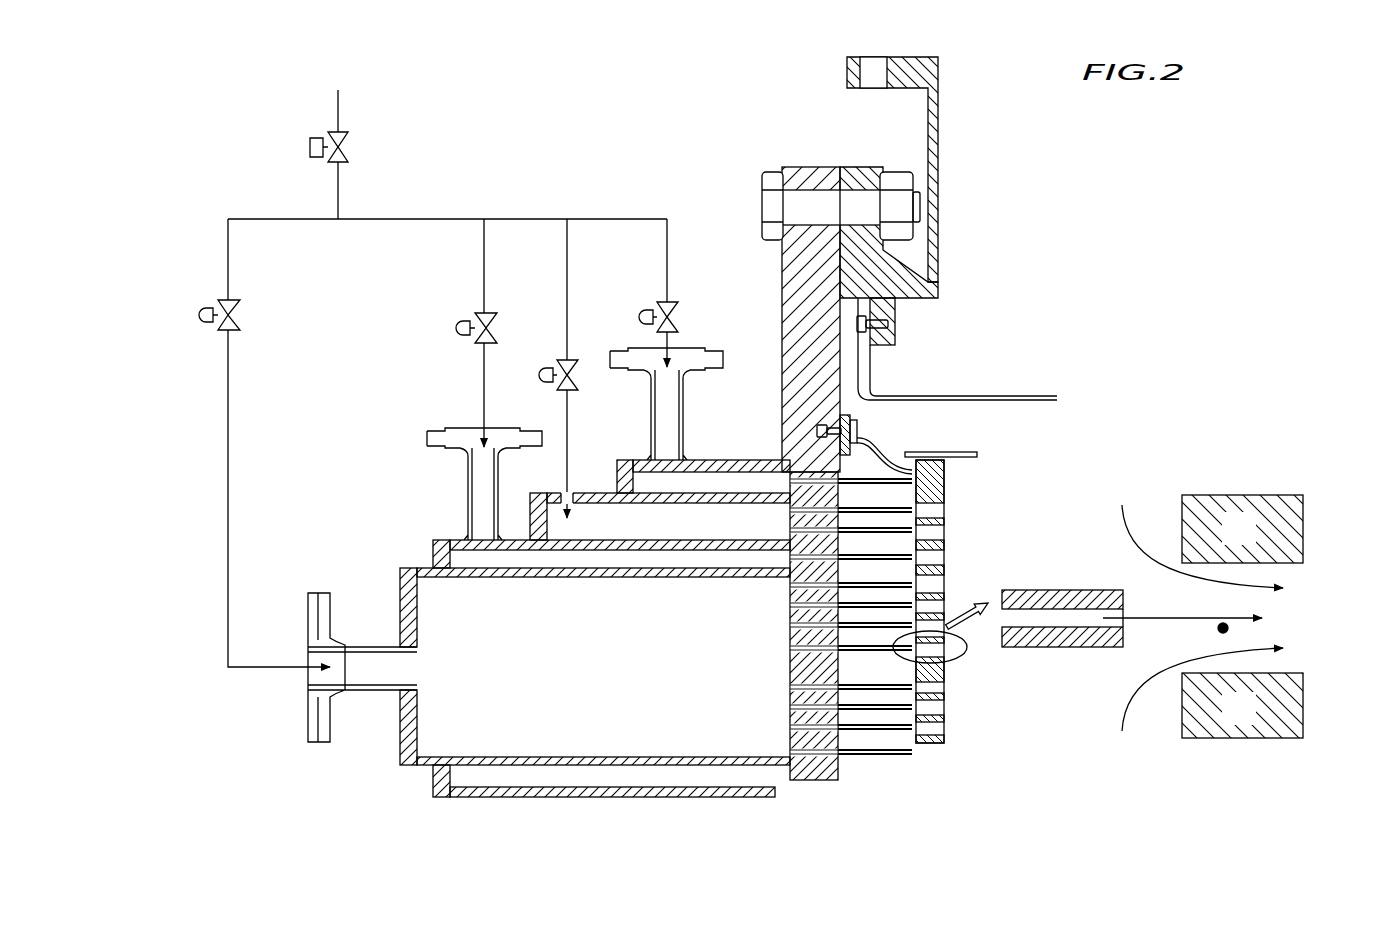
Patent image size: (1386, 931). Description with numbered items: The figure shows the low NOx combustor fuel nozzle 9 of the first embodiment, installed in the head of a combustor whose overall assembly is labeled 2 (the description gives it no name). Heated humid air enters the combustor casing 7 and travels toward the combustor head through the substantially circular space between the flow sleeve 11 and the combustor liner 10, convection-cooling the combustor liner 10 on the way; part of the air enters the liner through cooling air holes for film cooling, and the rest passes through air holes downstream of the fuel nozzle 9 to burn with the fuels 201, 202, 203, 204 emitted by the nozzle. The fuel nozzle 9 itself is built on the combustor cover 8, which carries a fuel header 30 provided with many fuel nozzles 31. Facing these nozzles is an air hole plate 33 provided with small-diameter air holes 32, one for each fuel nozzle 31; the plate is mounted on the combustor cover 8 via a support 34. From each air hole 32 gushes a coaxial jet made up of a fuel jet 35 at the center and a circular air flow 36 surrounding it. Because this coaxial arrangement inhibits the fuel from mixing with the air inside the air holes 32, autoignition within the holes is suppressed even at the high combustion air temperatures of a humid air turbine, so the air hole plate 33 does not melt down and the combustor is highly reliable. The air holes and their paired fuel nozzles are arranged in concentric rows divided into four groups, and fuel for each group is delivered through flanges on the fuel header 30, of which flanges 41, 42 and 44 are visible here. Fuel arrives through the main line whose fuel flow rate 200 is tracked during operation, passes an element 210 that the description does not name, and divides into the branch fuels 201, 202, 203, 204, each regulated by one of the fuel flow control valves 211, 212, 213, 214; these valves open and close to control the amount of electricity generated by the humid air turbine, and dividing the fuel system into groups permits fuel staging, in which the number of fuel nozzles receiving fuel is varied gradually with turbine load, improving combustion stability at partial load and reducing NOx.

The reactor vessel outer shell 2 is at (665, 833).
The combustor casing 7 is at (864, 167).
The combustor cover 8 is at (782, 273).
The fuel nozzle 9 is at (836, 812).
The combustor liner 10 is at (960, 452).
The flow sleeve 11 is at (990, 397).
The fuel header 30 is at (768, 692).
The fuel nozzle 31 is at (882, 755).
The air hole 32 is at (945, 728).
The air hole plate 33 is at (947, 478).
The support 34 is at (873, 440).
The fuel jet 35 is at (1150, 615).
The circular air flow 36 is at (1122, 518).
The flange 41 is at (308, 613).
The flange 42 is at (440, 428).
The flange 44 is at (626, 349).
The fuel flow rate 200 is at (337, 99).
The fuel 201 is at (228, 256).
The fuel 202 is at (484, 256).
The fuel 203 is at (567, 256).
The fuel 204 is at (667, 256).
The valve 210 is at (310, 148).
The fuel flow control valve 211 is at (198, 315).
The fuel flow control valve 212 is at (452, 328).
The fuel flow control valve 213 is at (546, 367).
The fuel flow control valve 214 is at (680, 319).